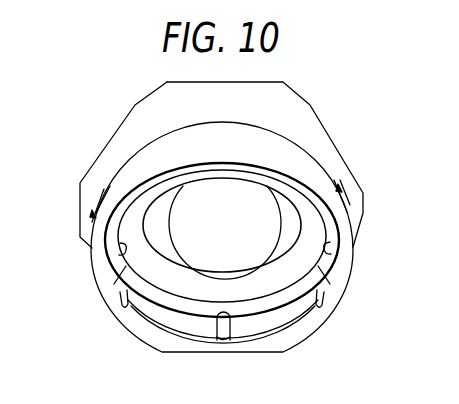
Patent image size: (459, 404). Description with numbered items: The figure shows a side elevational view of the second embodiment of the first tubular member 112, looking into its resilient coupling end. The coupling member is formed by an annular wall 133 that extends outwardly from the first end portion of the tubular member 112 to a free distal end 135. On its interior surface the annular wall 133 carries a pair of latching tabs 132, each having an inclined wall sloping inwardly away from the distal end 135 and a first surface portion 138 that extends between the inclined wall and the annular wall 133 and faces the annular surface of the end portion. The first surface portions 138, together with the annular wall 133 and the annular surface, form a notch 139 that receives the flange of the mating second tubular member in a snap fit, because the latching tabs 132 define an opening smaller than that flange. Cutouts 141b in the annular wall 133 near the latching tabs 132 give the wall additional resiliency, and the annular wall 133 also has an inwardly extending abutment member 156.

The first tubular member 112 is at (110, 149).
The cutouts 141b is at (109, 183).
The first surface portion 138 is at (122, 249).
The annular wall 133 is at (353, 268).
The latching tabs 132 is at (120, 294).
The free distal end 135 is at (150, 332).
The notch 139 is at (136, 268).
The abutment member 156 is at (233, 322).